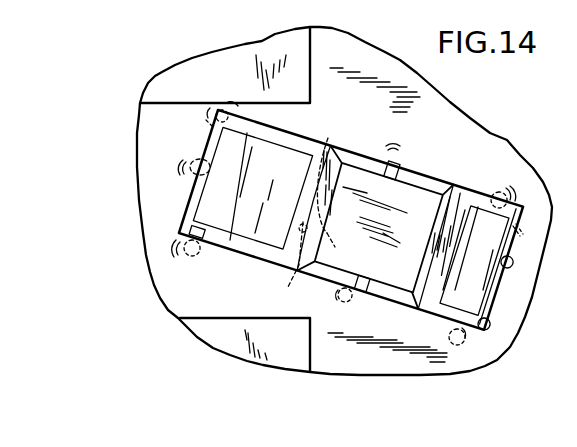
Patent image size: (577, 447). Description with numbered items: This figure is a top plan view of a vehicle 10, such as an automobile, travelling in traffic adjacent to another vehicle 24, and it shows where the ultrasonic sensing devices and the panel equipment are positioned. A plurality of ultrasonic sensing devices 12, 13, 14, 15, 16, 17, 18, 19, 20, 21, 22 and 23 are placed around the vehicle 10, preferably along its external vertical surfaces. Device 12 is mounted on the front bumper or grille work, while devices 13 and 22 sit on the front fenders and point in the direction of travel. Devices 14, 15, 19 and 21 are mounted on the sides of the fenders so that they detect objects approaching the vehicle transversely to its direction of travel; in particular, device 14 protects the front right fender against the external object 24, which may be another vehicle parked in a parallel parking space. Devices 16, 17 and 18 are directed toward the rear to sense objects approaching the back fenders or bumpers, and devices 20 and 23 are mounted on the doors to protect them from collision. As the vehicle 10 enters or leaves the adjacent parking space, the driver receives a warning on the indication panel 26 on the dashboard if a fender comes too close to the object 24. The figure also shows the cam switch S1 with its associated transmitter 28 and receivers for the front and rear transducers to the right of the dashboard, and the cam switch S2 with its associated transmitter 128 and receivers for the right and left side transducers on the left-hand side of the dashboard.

The vehicle 10 is at (405, 278).
The ultrasonic sensing device 12 is at (192, 152).
The ultrasonic sensing device 13 is at (205, 125).
The ultrasonic sensing device 14 is at (238, 117).
The ultrasonic sensing device 15 is at (495, 192).
The ultrasonic sensing device 16 is at (522, 233).
The ultrasonic sensing device 17 is at (510, 264).
The ultrasonic sensing device 18 is at (492, 317).
The ultrasonic sensing device 19 is at (461, 344).
The ultrasonic sensing device 20 is at (347, 303).
The ultrasonic sensing device 21 is at (194, 254).
The ultrasonic sensing device 22 is at (187, 200).
The ultrasonic sensing device 23 is at (399, 161).
The external object 24 is at (228, 90).
The indication panel 26 is at (335, 247).
The cam switch S1 is at (349, 173).
The transmitter 28 is at (326, 147).
The cam switch S2 is at (260, 261).
The transmitter 128 is at (296, 282).